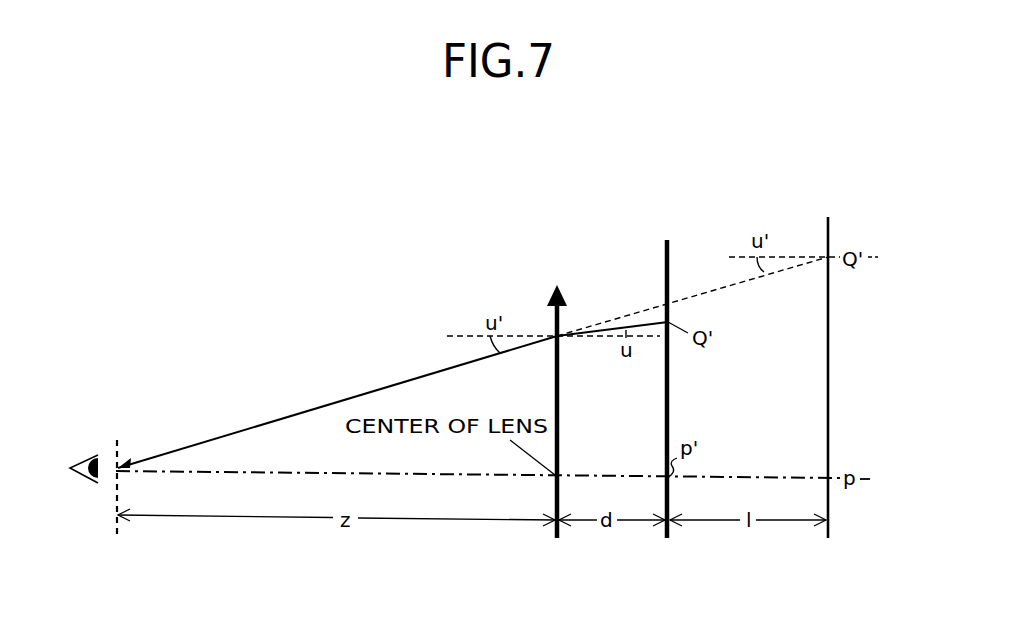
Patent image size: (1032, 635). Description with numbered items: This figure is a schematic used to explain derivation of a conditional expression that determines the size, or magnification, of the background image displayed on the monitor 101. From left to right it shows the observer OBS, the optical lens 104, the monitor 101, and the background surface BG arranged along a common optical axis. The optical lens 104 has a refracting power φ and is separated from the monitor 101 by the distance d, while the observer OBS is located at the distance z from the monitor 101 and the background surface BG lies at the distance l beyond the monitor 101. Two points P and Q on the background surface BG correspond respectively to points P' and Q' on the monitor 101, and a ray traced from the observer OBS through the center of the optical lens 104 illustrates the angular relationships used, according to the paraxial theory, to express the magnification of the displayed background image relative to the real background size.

The optical lens 104 is at (539, 363).
The monitor 101 is at (671, 353).
The background surface BG is at (831, 340).
The observer OBS is at (115, 461).